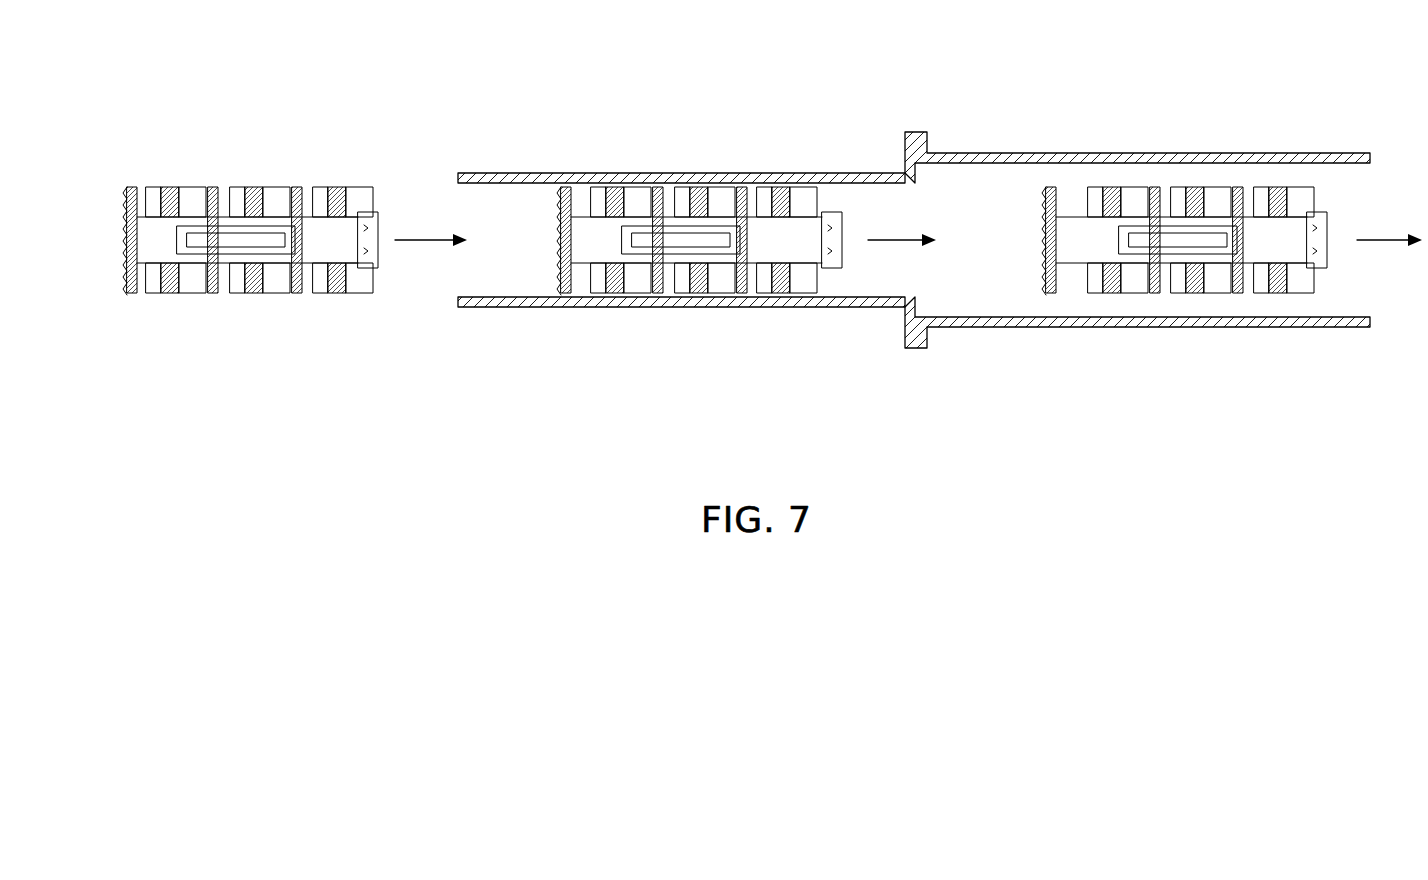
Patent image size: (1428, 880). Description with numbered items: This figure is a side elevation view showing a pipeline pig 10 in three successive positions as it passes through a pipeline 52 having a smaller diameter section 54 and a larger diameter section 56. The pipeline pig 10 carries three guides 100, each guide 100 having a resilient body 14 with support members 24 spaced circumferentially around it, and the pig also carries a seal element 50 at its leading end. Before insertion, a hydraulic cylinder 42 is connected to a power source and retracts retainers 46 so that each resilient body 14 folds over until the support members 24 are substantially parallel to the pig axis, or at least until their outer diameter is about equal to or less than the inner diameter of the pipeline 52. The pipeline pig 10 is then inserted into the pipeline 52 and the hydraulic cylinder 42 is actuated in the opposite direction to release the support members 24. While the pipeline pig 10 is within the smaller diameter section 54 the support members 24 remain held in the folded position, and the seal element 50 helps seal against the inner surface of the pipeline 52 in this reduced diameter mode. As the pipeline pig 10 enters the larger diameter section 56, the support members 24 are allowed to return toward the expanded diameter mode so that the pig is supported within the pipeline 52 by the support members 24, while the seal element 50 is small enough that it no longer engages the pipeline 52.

The pipeline pig 10 is at (130, 240).
The resilient body 14 is at (162, 190).
The support members 24 is at (178, 190).
The hydraulic cylinder 42 is at (227, 240).
The retainers 46 is at (177, 290).
The seal element 50 is at (127, 280).
The pipeline 52 is at (906, 259).
The smaller diameter section 54 is at (490, 177).
The larger diameter section 56 is at (947, 155).
The guides 100 is at (167, 290).